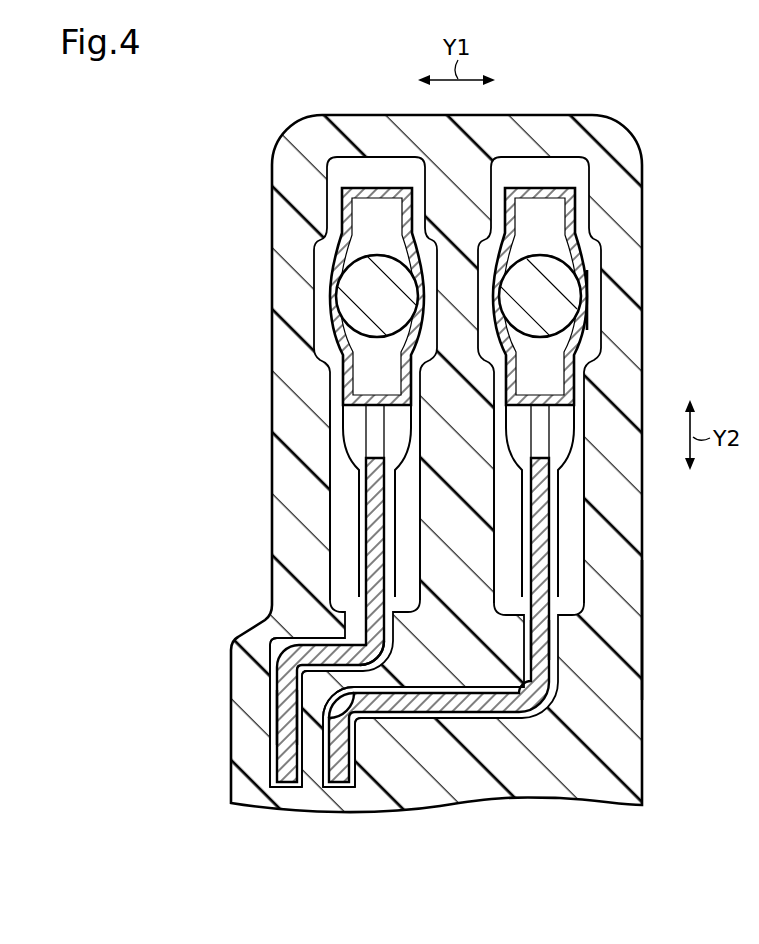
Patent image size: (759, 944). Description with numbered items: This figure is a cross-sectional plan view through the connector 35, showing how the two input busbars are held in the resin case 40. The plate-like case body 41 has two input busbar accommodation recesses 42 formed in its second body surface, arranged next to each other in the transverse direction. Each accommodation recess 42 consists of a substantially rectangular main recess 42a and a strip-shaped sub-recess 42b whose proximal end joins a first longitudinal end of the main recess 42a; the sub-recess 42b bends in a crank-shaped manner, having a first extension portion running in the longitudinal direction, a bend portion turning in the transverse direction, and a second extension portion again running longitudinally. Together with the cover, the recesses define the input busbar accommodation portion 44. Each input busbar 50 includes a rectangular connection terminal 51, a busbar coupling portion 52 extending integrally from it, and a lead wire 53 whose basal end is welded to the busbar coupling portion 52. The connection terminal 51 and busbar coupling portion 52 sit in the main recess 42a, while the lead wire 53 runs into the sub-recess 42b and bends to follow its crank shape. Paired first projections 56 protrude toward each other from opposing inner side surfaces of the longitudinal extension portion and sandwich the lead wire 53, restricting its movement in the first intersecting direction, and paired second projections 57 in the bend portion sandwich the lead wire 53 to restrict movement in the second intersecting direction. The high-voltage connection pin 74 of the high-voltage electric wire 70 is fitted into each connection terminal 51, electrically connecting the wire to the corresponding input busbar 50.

The connector 35 is at (271, 155).
The case 40 is at (620, 136).
The case body 41 is at (641, 628).
The input busbar accommodation recess 42 is at (330, 152).
The main recess 42a is at (328, 456).
The sub-recess 42b is at (262, 627).
The input busbar accommodation portion 44 is at (340, 534).
The input busbar 50 is at (339, 212).
The connection terminal 51 is at (332, 262).
The busbar coupling portion 52 is at (360, 513).
The lead wire 53 is at (486, 708).
The first projection 56 is at (553, 640).
The second projection 57 is at (344, 652).
The high-voltage electric wire 70 is at (590, 291).
The high-voltage connection pin 74 is at (355, 302).